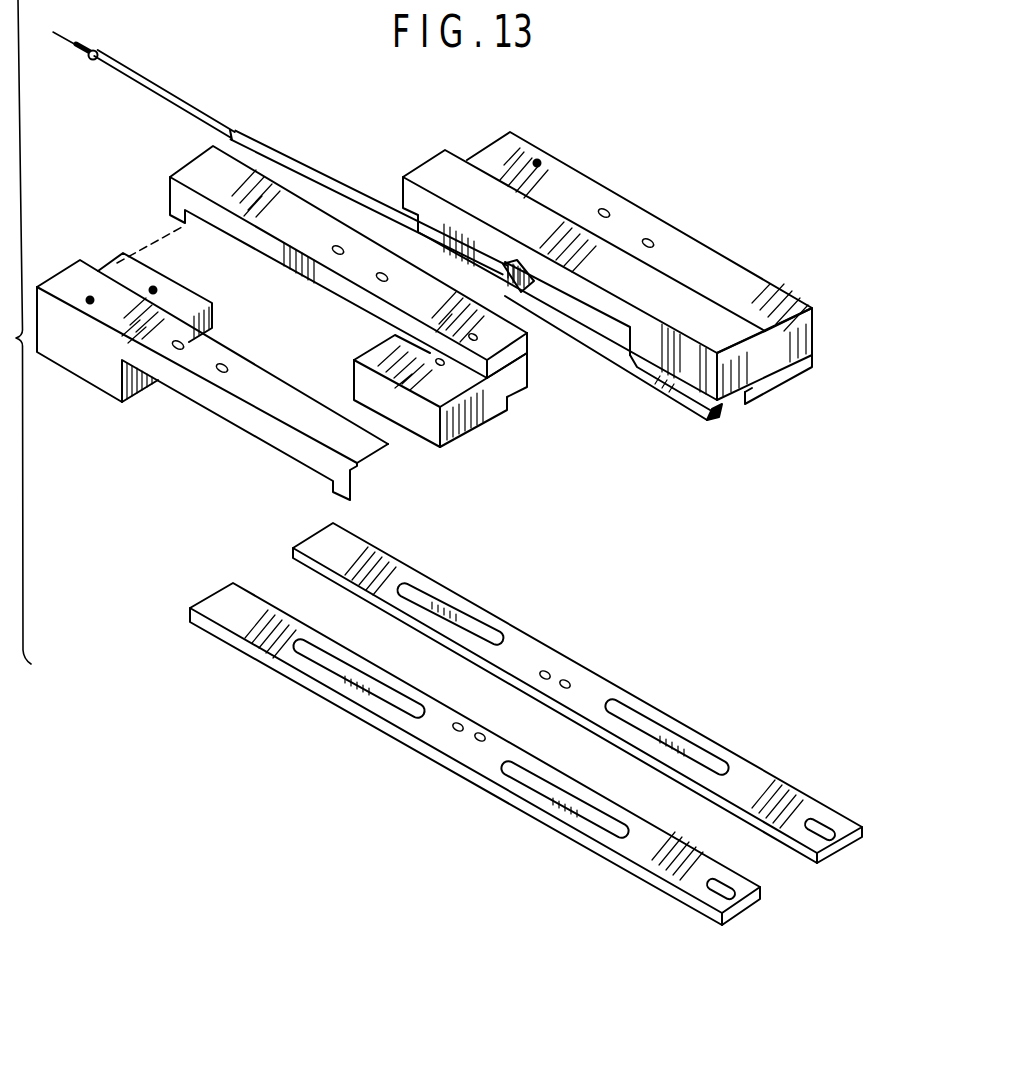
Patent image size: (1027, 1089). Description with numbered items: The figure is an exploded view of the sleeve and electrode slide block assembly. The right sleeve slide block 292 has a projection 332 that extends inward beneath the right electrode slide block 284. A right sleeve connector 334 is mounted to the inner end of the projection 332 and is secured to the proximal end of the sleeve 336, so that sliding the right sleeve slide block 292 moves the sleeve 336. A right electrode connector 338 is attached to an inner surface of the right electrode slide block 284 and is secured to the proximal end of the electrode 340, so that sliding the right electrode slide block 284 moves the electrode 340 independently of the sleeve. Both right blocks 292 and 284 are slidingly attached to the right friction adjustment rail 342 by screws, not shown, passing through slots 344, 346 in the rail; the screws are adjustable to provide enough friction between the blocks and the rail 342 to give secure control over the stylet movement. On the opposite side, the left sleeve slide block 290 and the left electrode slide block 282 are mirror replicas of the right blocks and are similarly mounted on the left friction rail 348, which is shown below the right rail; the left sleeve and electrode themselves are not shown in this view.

The left electrode slide block 282 is at (190, 172).
The right electrode slide block 284 is at (782, 380).
The left sleeve slide block 290 is at (63, 270).
The right sleeve slide block 292 is at (725, 245).
The projection 332 is at (430, 226).
The right sleeve connector 334 is at (520, 290).
The sleeve 336 is at (293, 163).
The right electrode connector 338 is at (732, 408).
The electrode 340 is at (614, 360).
The right friction adjustment rail 342 is at (588, 693).
The slot 344 is at (453, 604).
The slot 346 is at (682, 750).
The left friction rail 348 is at (640, 887).